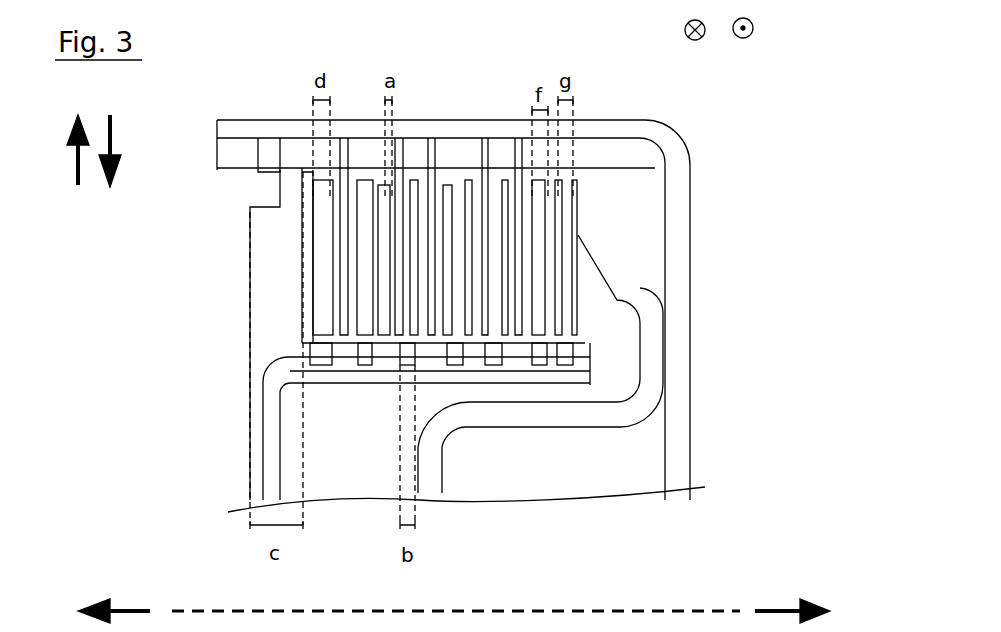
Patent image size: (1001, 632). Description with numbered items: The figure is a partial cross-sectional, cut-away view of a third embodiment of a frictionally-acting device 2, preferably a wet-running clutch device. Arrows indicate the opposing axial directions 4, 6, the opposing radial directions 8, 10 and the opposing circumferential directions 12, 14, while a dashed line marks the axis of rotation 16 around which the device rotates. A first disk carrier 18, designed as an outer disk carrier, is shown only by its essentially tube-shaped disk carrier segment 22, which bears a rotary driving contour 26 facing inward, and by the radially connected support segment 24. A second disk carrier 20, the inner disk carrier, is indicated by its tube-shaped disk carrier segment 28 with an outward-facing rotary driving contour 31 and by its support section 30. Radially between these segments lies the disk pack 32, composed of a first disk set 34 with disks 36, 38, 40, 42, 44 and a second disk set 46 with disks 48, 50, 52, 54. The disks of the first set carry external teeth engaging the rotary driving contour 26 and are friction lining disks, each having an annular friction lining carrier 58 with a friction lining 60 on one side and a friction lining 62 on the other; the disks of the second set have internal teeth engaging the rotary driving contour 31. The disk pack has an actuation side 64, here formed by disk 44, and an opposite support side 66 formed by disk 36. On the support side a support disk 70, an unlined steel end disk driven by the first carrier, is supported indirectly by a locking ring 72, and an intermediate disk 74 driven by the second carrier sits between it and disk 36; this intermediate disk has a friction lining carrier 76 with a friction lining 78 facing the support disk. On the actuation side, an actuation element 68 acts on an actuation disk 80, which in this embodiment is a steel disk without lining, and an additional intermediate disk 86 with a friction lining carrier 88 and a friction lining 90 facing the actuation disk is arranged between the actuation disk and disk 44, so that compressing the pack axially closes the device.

The frictionally-acting device 2 is at (785, 98).
The axial direction 4 is at (785, 607).
The axial direction 6 is at (122, 608).
The radial direction 8 is at (73, 158).
The radial direction 10 is at (113, 138).
The circumferential direction 12 is at (755, 27).
The circumferential direction 14 is at (683, 28).
The axis of rotation 16 is at (682, 610).
The first disk carrier 18 is at (707, 152).
The second disk carrier 20 is at (249, 376).
The disk carrier segment 22 is at (622, 120).
The support segment 24 is at (678, 435).
The rotary driving contour 26 is at (540, 155).
The disk carrier segment 28 is at (352, 377).
The support section 30 is at (267, 473).
The rotary driving contour 31 is at (553, 352).
The disk pack 32 is at (403, 253).
The first disk set 34 is at (435, 174).
The disk 36 is at (344, 128).
The disk 38 is at (400, 128).
The disk 40 is at (432, 128).
The disk 42 is at (478, 128).
The disk 44 is at (520, 128).
The second disk set 46 is at (441, 477).
The disk 48 is at (368, 376).
The disk 50 is at (412, 376).
The disk 52 is at (457, 376).
The disk 54 is at (498, 376).
The friction lining carrier 58 is at (388, 240).
The friction lining 60 is at (395, 288).
The friction lining 62 is at (387, 213).
The actuation side 64 is at (542, 240).
The support side 66 is at (319, 277).
The actuation element 68 is at (648, 382).
The support disk 70 is at (267, 271).
The locking ring 72 is at (262, 155).
The intermediate disk 74 is at (293, 326).
The friction lining carrier 76 is at (323, 190).
The friction lining 78 is at (310, 307).
The actuation disk 80 is at (579, 263).
The intermediate disk 86 is at (545, 376).
The friction lining carrier 88 is at (543, 250).
The friction lining 90 is at (552, 292).